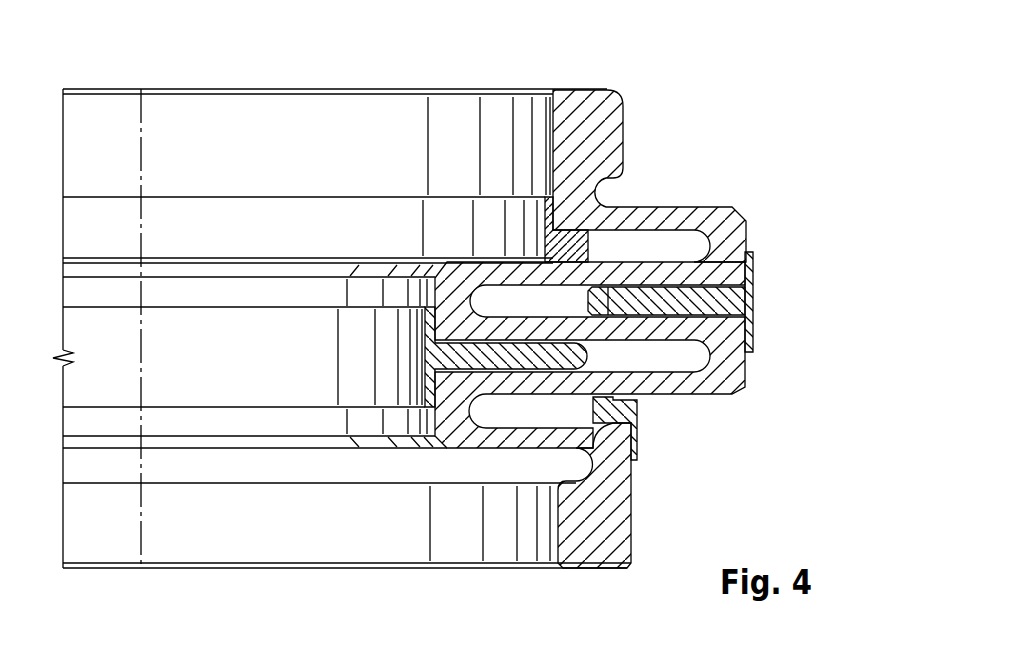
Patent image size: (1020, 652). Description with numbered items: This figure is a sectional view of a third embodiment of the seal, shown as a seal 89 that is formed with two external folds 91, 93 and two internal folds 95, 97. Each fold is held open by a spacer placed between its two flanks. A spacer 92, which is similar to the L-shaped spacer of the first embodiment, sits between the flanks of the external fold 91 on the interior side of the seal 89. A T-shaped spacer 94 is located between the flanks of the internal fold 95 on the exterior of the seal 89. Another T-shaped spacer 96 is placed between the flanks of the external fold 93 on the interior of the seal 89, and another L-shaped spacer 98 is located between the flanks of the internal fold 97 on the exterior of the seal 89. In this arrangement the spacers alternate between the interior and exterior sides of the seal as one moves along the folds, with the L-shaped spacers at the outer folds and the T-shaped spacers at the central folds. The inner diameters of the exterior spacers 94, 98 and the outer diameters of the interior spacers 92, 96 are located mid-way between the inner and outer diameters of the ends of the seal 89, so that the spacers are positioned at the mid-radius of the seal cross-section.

The seal 89 is at (615, 72).
The external fold 91 is at (703, 207).
The spacer 92 is at (590, 243).
The external fold 93 is at (725, 397).
The T-shaped spacer 94 is at (755, 303).
The internal fold 95 is at (500, 262).
The T-shaped spacer 96 is at (590, 355).
The internal fold 97 is at (490, 450).
The L-shaped spacer 98 is at (638, 415).